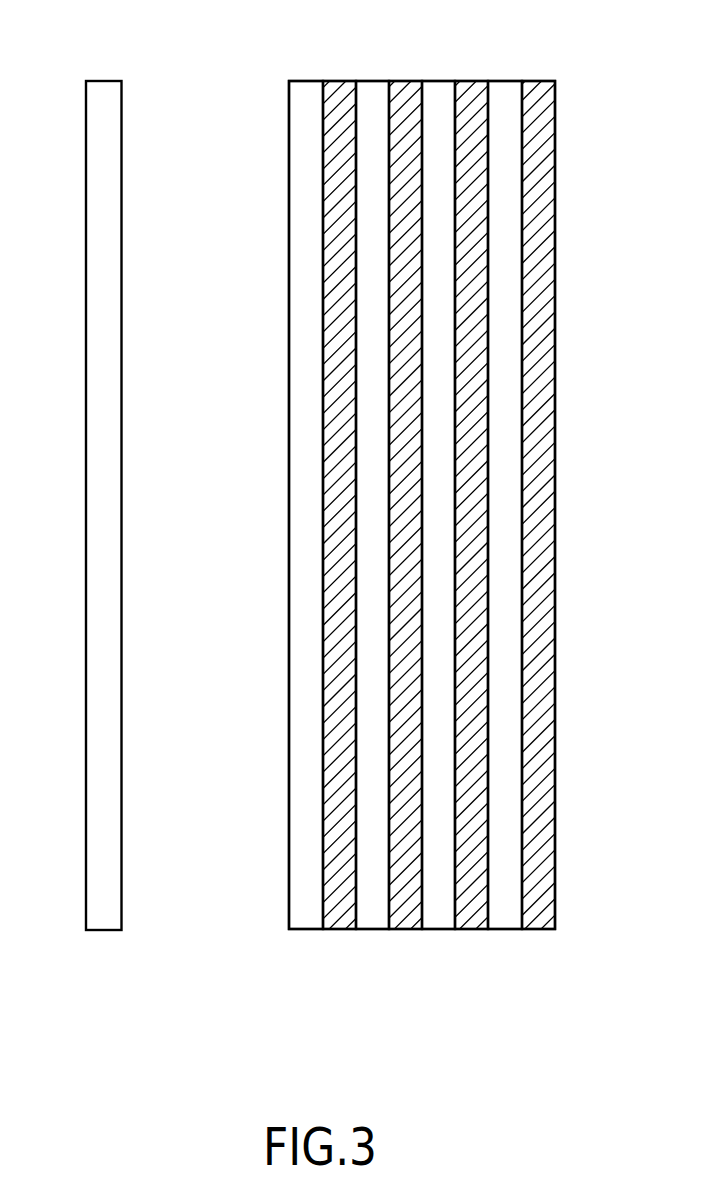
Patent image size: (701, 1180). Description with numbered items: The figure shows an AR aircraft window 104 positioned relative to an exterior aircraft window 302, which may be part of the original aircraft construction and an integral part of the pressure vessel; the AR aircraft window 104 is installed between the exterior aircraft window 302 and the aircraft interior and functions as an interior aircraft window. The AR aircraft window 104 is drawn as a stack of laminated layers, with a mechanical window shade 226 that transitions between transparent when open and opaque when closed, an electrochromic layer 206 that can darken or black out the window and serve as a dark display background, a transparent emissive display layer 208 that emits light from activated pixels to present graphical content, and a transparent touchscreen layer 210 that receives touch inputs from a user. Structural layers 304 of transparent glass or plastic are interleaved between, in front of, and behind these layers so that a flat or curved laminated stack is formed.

The AR aircraft window 104 is at (437, 58).
The exterior aircraft window 302 is at (103, 930).
The mechanical window shade 226 is at (306, 929).
The structural layer 304 is at (339, 929).
The electrochromic layer 206 is at (372, 929).
The transparent emissive display layer 208 is at (438, 929).
The transparent touchscreen layer 210 is at (505, 929).